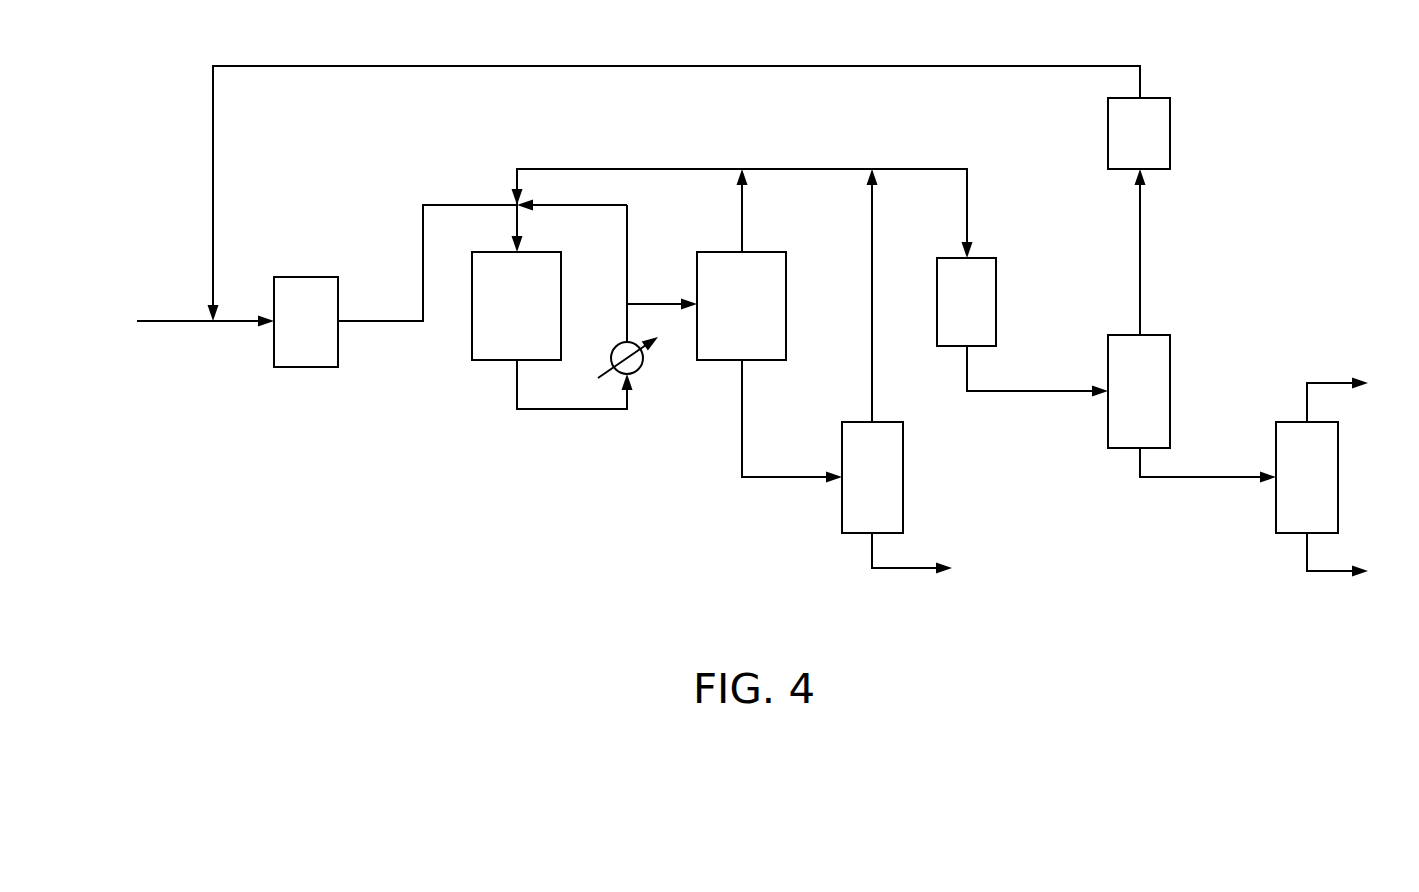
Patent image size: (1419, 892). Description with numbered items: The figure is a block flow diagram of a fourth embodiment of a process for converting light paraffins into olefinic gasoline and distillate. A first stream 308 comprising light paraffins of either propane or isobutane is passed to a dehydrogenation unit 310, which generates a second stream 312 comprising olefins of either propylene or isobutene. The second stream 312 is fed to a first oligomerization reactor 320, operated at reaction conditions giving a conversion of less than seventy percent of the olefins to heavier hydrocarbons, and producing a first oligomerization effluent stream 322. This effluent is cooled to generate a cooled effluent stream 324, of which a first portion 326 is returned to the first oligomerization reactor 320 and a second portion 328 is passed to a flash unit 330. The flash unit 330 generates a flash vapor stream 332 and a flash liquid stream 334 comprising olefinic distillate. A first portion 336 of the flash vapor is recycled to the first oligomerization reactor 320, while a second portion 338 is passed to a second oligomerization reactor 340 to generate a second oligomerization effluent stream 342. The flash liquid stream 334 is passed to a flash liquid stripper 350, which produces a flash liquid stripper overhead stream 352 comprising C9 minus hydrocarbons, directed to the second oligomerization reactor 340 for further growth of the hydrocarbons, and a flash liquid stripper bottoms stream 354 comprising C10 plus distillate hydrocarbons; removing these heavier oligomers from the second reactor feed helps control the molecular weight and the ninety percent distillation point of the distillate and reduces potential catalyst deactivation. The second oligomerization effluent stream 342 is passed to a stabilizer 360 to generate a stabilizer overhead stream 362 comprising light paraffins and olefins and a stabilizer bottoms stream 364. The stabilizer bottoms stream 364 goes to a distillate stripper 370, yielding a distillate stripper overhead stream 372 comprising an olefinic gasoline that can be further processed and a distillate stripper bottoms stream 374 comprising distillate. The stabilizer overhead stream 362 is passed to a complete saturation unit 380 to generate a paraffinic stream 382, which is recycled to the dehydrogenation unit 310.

The first stream 308 is at (180, 320).
The dehydrogenation unit 310 is at (313, 277).
The second stream 312 is at (348, 320).
The first oligomerization reactor 320 is at (492, 251).
The first oligomerization effluent stream 322 is at (512, 404).
The cooled effluent stream 324 is at (623, 335).
The first portion of the cooled effluent stream 326 is at (600, 204).
The second portion of the cooled effluent stream 328 is at (652, 300).
The flash unit 330 is at (775, 251).
The flash vapor stream 332 is at (744, 203).
The flash liquid stream 334 is at (740, 470).
The first portion of the flash vapor stream 336 is at (647, 168).
The second portion of the flash vapor stream 338 is at (780, 168).
The second oligomerization reactor 340 is at (987, 258).
The second oligomerization effluent stream 342 is at (995, 390).
The flash liquid stripper 350 is at (893, 421).
The flash liquid stripper overhead stream 352 is at (873, 288).
The flash liquid stripper bottoms stream 354 is at (870, 562).
The stabilizer 360 is at (1160, 334).
The stabilizer overhead stream 362 is at (1141, 252).
The stabilizer bottoms stream 364 is at (1193, 480).
The distillate stripper 370 is at (1323, 421).
The distillate stripper overhead stream 372 is at (1328, 382).
The distillate stripper bottoms stream 374 is at (1303, 565).
The complete saturation unit 380 is at (1160, 97).
The paraffinic stream 382 is at (993, 64).